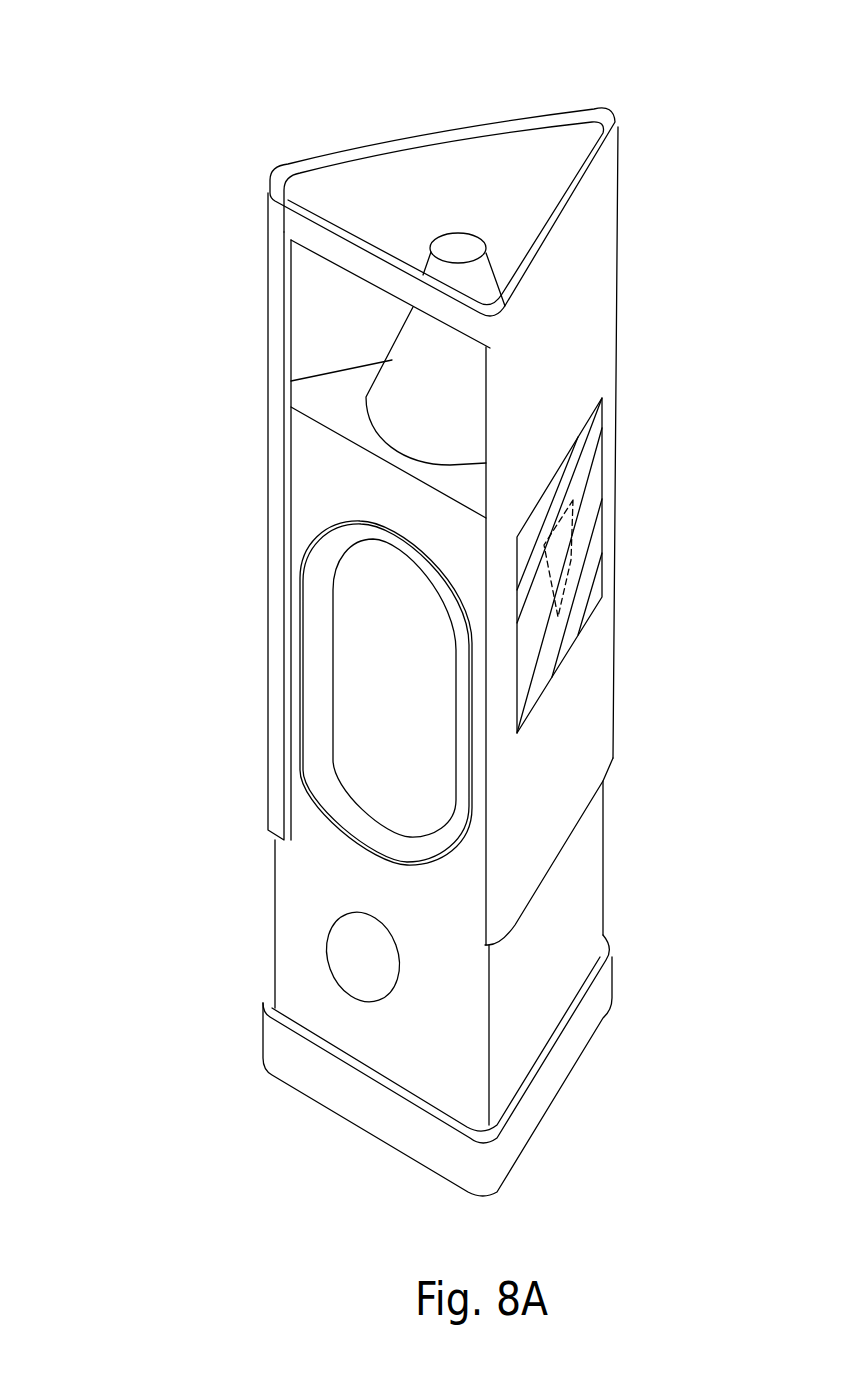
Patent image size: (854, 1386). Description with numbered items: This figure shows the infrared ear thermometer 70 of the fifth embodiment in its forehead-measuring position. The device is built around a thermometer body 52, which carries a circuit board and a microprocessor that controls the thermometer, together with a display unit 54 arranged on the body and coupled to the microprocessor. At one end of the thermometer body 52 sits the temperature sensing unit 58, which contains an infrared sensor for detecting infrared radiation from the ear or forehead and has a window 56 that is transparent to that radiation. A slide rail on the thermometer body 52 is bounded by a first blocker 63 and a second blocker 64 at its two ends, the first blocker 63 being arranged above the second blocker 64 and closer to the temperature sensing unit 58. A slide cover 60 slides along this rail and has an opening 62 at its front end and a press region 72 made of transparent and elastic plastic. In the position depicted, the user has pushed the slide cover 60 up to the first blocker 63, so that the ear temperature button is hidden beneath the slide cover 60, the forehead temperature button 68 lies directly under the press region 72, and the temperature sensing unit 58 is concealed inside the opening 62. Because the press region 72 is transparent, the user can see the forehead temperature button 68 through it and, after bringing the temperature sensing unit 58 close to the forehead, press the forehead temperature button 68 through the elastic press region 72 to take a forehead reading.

The infrared ear thermometer 70 is at (195, 162).
The thermometer body 52 is at (318, 502).
The display unit 54 is at (347, 685).
The window 56 is at (458, 248).
The temperature sensing unit 58 is at (400, 357).
The slide cover 60 is at (572, 360).
The opening 62 is at (546, 154).
The first blocker 63 is at (570, 832).
The second blocker 64 is at (570, 1027).
The forehead temperature button 68 is at (562, 550).
The press region 72 is at (588, 440).